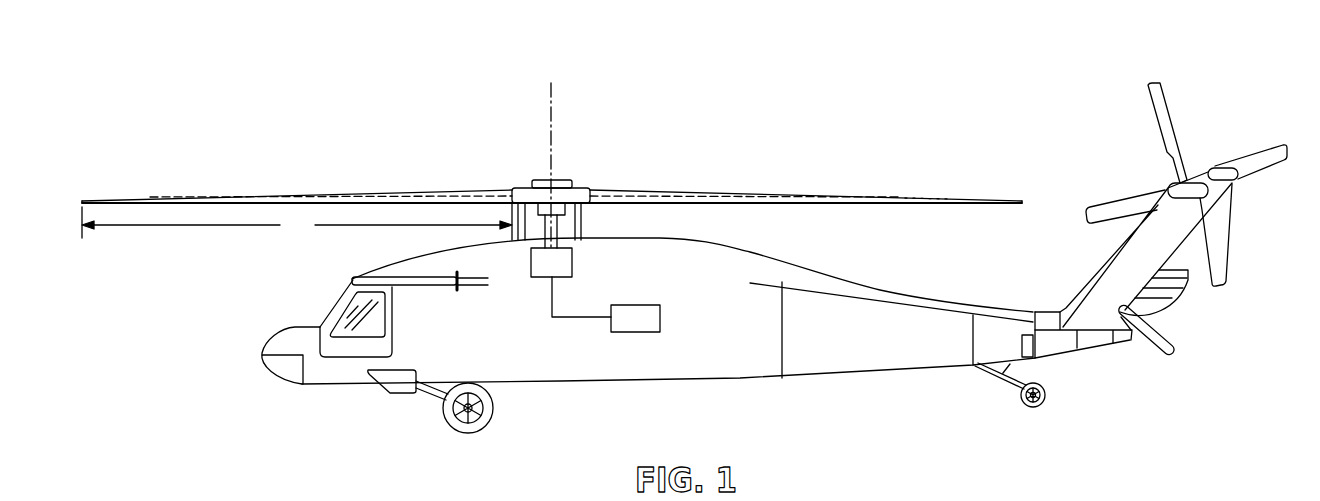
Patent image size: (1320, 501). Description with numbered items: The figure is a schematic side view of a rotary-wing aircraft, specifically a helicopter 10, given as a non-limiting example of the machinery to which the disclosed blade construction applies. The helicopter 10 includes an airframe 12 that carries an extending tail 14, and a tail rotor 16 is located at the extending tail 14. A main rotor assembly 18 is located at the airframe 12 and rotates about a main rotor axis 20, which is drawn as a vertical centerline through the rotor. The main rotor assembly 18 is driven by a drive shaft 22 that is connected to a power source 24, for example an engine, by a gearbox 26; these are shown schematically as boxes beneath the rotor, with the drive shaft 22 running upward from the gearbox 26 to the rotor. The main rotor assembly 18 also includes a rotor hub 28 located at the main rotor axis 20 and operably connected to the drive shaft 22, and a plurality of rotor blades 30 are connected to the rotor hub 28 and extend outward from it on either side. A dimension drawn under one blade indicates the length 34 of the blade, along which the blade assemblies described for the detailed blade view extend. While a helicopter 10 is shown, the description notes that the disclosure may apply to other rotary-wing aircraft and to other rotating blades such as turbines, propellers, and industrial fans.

The helicopter 10 is at (148, 145).
The airframe 12 is at (562, 360).
The extending tail 14 is at (932, 350).
The tail rotor 16 is at (1207, 247).
The main rotor assembly 18 is at (520, 188).
The main rotor axis 20 is at (553, 112).
The drive shaft 22 is at (562, 228).
The power source 24 is at (660, 315).
The gearbox 26 is at (572, 258).
The rotor hub 28 is at (560, 180).
The rotor blades 30 is at (353, 192).
The length 34 is at (297, 222).